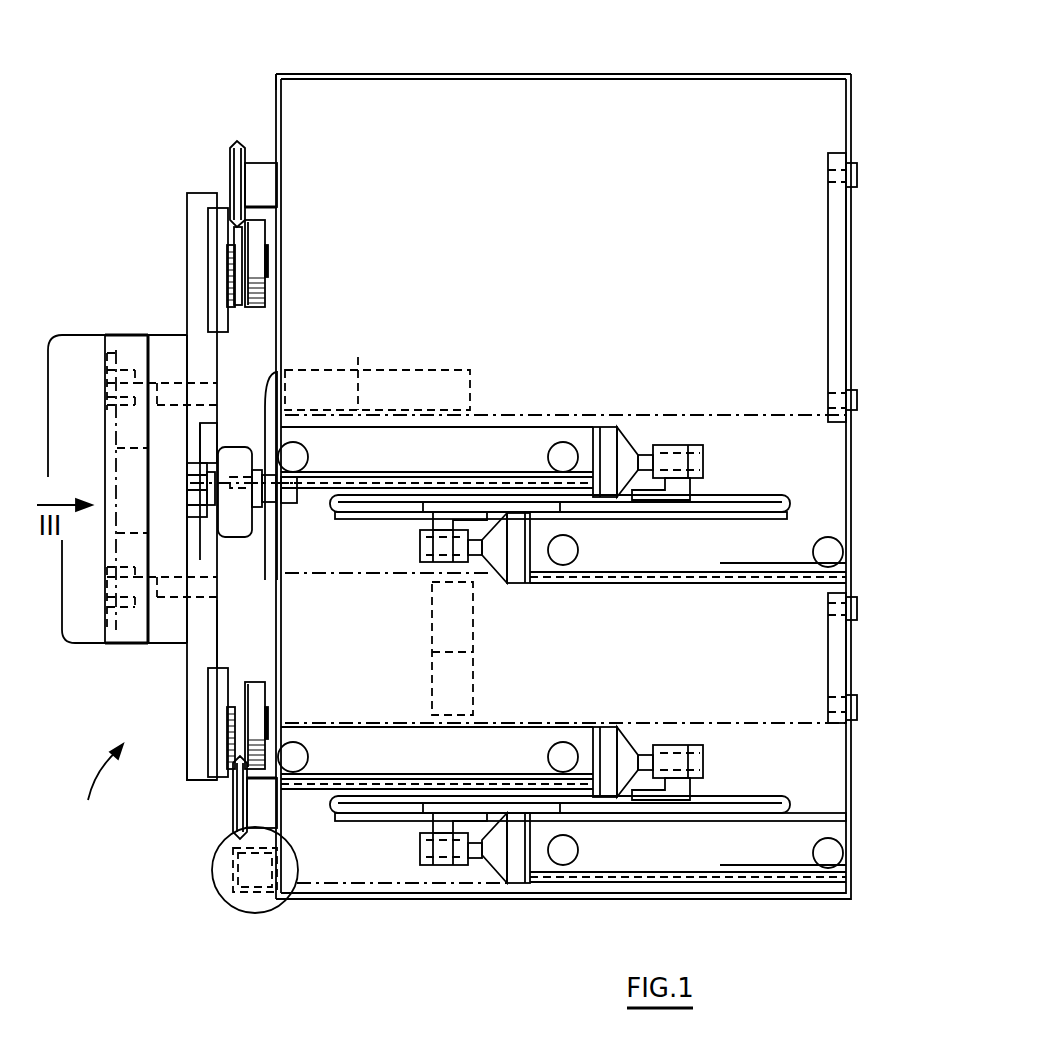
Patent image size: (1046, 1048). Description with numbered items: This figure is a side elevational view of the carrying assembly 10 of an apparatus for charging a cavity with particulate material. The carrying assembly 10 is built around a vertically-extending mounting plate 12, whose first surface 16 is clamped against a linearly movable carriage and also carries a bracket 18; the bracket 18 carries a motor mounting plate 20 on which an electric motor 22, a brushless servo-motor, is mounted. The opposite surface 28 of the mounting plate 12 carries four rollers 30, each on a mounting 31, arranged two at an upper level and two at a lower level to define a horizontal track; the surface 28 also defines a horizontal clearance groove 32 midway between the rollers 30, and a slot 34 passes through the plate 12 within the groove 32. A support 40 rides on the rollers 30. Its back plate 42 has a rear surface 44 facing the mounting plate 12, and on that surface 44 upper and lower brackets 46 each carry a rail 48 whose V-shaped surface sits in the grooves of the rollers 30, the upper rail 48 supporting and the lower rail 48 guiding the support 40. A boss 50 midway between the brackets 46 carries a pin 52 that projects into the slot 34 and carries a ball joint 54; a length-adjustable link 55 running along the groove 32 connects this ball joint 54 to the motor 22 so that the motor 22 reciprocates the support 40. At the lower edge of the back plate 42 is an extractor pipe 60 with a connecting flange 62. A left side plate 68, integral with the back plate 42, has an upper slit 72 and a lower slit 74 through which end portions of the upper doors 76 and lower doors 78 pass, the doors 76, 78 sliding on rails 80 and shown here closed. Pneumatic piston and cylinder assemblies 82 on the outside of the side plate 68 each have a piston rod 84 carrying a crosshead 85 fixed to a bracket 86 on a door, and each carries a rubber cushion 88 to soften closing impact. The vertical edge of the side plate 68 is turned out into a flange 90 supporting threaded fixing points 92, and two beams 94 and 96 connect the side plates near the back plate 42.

The carrying assembly 10 is at (94, 788).
The mounting plate 12 is at (197, 247).
The first surface 16 is at (186, 770).
The bracket 18 is at (165, 646).
The motor mounting plate 20 is at (128, 646).
The electric motor 22 is at (88, 646).
The opposite surface 28 is at (225, 633).
The rollers 30 is at (230, 292).
The mounting 31 is at (215, 225).
The clearance groove 32 is at (200, 432).
The slot 34 is at (190, 473).
The support 40 is at (766, 122).
The back plate 42 is at (276, 102).
The rear surface 44 is at (274, 86).
The bracket 46 is at (268, 173).
The rail 48 is at (232, 143).
The boss 50 is at (268, 395).
The pin 52 is at (193, 488).
The ball joint 54 is at (222, 512).
The link 55 is at (240, 455).
The extractor pipe 60 is at (262, 896).
The connecting flange 62 is at (222, 878).
The left side plate 68 is at (545, 78).
The upper slit 72 is at (790, 505).
The lower slit 74 is at (790, 806).
The upper doors 76 is at (507, 503).
The lower doors 78 is at (443, 803).
The rails 80 is at (788, 519).
The pneumatic piston and cylinder assemblies 82 is at (553, 437).
The piston rod 84 is at (658, 447).
The crosshead 85 is at (505, 870).
The bracket 86 is at (448, 512).
The rubber cushion 88 is at (605, 440).
The flanges 90 is at (851, 233).
The threaded fixing points 92 is at (855, 165).
The beam 94 is at (360, 370).
The beam 96 is at (483, 657).